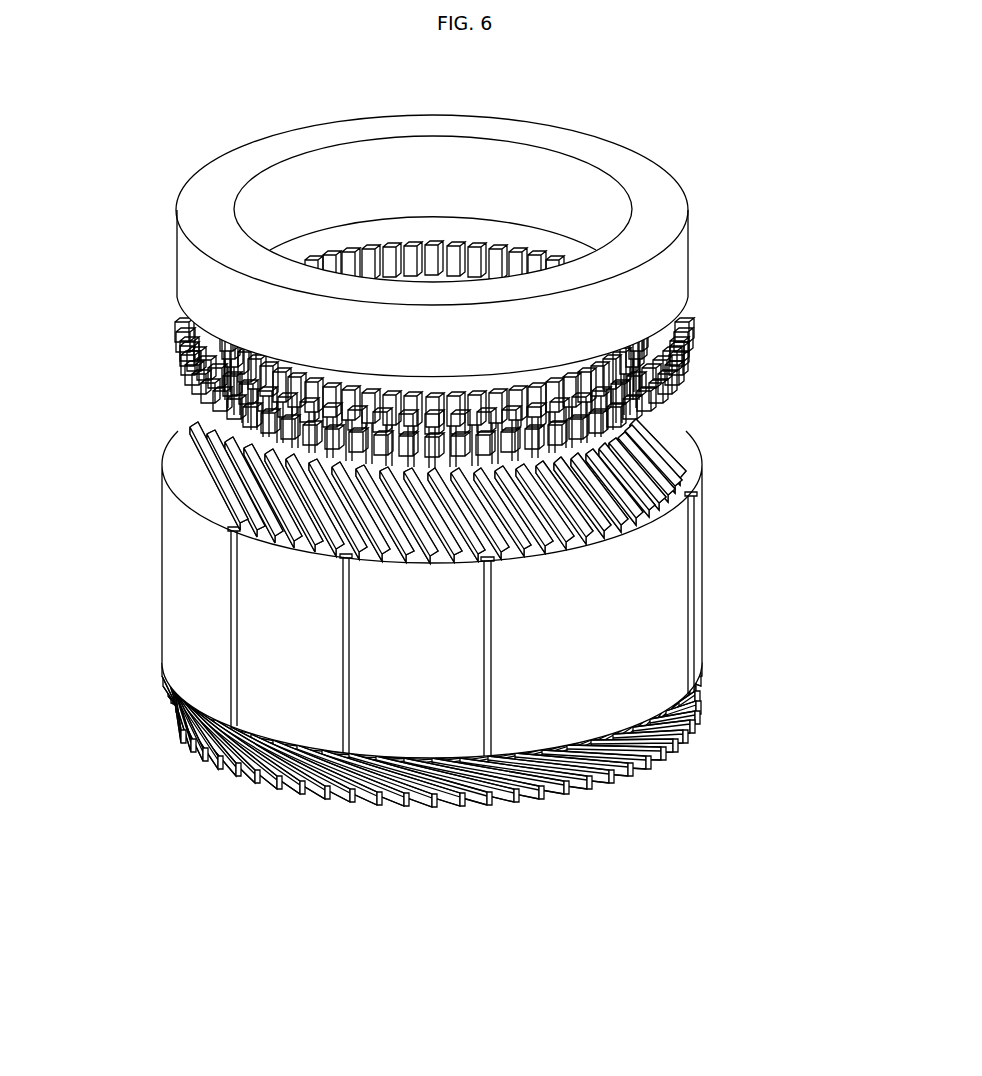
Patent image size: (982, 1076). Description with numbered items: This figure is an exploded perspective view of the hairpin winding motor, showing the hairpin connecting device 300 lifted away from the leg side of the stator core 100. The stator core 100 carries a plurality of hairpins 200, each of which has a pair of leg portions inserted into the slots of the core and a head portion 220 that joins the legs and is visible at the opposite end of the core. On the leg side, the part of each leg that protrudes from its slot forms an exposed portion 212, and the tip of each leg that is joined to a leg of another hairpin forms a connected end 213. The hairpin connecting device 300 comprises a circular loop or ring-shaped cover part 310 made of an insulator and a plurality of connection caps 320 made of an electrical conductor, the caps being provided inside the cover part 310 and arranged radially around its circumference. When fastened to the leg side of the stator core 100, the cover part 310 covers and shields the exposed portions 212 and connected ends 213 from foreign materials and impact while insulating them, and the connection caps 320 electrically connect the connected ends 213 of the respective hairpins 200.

The stator core 100 is at (152, 585).
The hairpin 200 is at (625, 785).
The exposed portion 212 is at (620, 505).
The connected end 213 is at (200, 390).
The head portion 220 is at (353, 802).
The hairpin connecting device 300 is at (835, 262).
The cover part 310 is at (675, 273).
The connection cap 320 is at (680, 335).